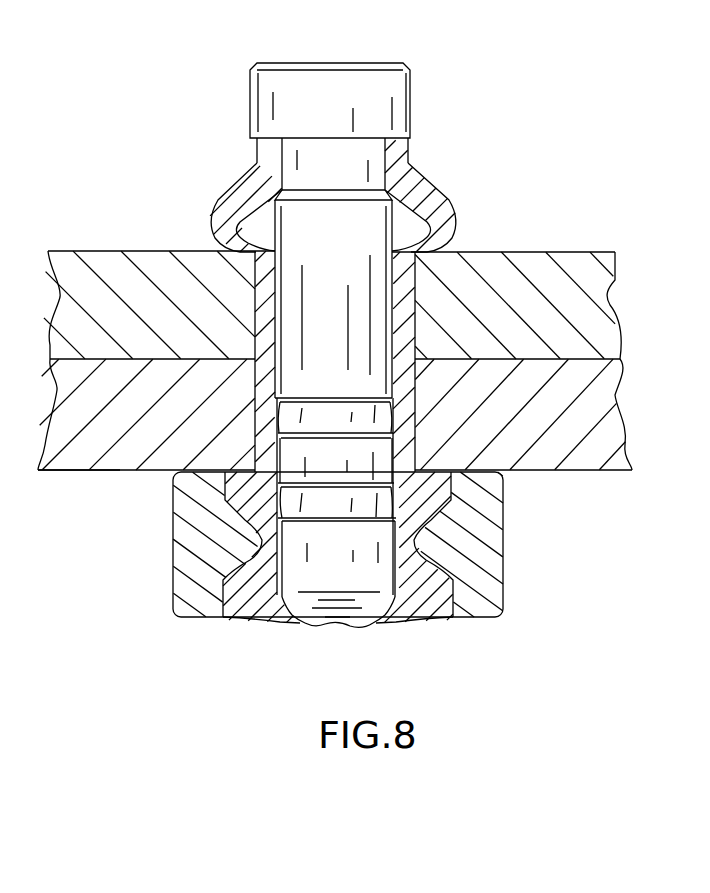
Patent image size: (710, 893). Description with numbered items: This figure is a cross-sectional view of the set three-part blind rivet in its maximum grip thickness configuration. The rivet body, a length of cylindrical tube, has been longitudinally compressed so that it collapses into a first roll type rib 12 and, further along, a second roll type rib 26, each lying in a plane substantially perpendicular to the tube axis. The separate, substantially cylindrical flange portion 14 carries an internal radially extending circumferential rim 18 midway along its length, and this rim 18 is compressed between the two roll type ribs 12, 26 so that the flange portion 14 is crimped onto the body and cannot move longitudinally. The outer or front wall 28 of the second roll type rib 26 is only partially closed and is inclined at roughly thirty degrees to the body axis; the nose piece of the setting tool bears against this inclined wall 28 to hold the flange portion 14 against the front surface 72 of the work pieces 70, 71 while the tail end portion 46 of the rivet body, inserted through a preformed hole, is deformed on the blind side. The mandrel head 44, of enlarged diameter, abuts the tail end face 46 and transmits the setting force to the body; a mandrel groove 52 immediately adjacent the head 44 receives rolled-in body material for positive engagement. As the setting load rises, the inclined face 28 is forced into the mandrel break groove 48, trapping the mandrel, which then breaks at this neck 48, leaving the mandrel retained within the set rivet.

The first roll type rib 12 is at (263, 495).
The rivet flange portion 14 is at (205, 573).
The internal radially extending circumferential rim 18 is at (430, 540).
The second roll type rib 26 is at (443, 585).
The front wall of second roll type rib 28 is at (422, 605).
The mandrel head 44 is at (292, 110).
The tail end face of rivet body 46 is at (397, 142).
The mandrel break neck 48 is at (291, 624).
The mandrel groove 52 is at (307, 160).
The upper workpiece 70 is at (415, 290).
The work piece 71 is at (588, 397).
The front surface of work piece 72 is at (103, 473).